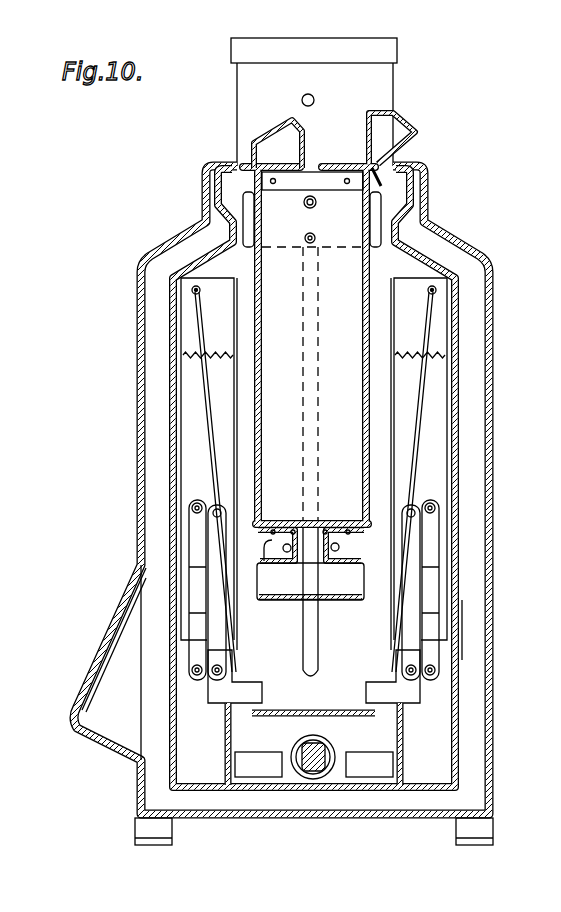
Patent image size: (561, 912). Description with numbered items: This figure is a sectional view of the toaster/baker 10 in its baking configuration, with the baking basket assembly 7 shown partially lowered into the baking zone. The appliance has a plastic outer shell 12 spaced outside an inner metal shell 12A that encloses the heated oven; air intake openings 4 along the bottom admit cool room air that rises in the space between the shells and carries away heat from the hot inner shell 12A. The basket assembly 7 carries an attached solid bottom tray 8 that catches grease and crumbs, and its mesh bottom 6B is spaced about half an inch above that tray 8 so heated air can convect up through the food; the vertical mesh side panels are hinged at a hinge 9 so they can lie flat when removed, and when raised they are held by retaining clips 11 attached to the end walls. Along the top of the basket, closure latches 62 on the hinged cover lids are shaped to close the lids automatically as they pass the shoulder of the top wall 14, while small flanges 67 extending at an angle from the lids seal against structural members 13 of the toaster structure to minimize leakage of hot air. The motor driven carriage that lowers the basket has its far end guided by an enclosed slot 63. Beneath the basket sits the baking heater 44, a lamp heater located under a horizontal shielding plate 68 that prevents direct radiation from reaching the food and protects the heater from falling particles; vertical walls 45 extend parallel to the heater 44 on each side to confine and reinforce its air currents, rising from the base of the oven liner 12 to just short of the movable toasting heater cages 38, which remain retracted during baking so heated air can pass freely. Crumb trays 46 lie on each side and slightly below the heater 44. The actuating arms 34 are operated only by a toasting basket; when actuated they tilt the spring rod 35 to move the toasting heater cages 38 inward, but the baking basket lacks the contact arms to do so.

The air intake openings 4 is at (490, 772).
The mesh bottom 6B is at (345, 588).
The baking basket assembly 7 is at (248, 470).
The bottom tray 8 is at (388, 531).
The hinge 9 is at (333, 583).
The toaster/baker 10 is at (518, 540).
The retaining clips 11 is at (290, 238).
The outer shell 12 is at (486, 417).
The inner metal shell 12A is at (460, 633).
The structural members 13 is at (195, 265).
The top wall 14 is at (410, 92).
The actuating arm 34 is at (213, 683).
The spring rod 35 is at (213, 451).
The toasting heater cages 38 is at (193, 413).
The baking heater 44 is at (315, 764).
The vertical walls 45 is at (226, 722).
The crumb trays 46 is at (262, 770).
The closure latches 62 is at (395, 145).
The enclosed slot 63 is at (330, 366).
The small flanges 67 is at (263, 137).
The horizontal shielding plate 68 is at (374, 717).